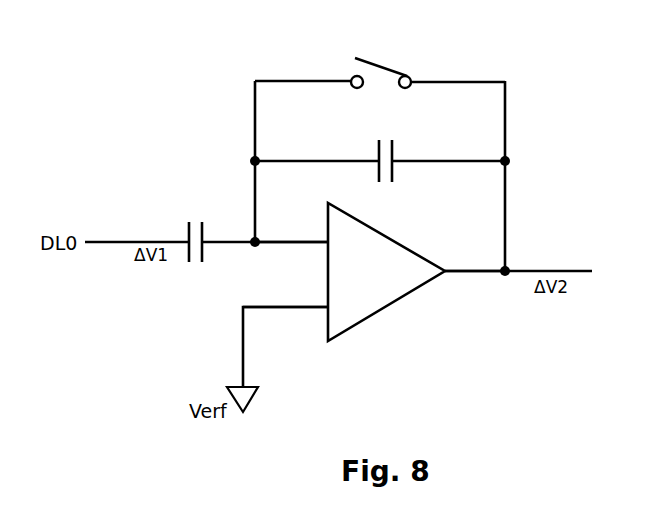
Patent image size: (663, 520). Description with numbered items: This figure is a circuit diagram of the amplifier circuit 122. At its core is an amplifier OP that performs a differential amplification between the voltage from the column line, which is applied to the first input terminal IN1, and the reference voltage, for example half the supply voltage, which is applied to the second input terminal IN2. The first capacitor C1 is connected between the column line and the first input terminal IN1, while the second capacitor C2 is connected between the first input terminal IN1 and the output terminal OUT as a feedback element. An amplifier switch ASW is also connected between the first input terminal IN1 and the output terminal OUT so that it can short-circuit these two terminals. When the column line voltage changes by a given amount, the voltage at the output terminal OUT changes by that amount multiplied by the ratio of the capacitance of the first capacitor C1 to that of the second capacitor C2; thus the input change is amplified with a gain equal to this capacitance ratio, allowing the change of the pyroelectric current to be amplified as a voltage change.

The amplifier circuit 122 is at (531, 81).
The amplifier switch ASW is at (393, 69).
The first capacitor C1 is at (195, 231).
The second capacitor C2 is at (384, 151).
The amplifier OP is at (386, 272).
The first input terminal IN1 is at (326, 237).
The second input terminal IN2 is at (326, 312).
The output terminal OUT is at (460, 273).